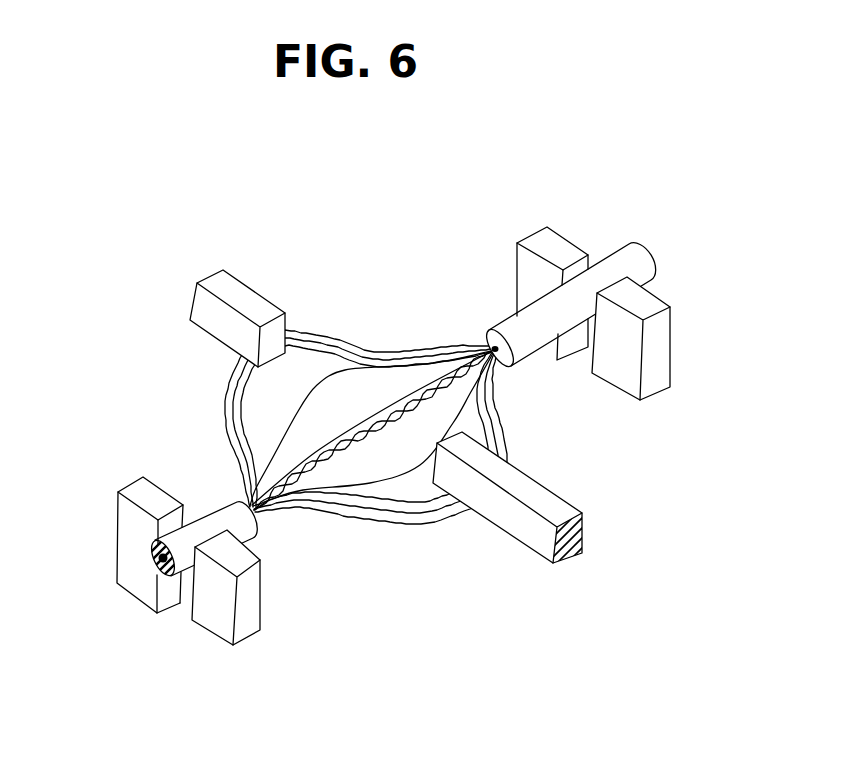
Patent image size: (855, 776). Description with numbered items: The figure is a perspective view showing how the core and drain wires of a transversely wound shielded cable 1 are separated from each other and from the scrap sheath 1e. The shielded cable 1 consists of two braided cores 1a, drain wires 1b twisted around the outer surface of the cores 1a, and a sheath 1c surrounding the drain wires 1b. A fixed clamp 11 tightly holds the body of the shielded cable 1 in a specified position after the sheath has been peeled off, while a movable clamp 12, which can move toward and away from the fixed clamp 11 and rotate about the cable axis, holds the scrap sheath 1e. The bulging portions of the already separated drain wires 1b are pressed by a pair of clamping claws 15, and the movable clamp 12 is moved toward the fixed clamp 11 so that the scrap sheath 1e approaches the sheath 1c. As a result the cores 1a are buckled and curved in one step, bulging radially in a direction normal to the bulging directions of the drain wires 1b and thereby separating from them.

The shielded cable 1 is at (17, 379).
The cores 1a is at (315, 456).
The drain wires 1b is at (230, 433).
The sheath 1c is at (240, 505).
The scrap sheath 1e is at (637, 263).
The fixed clamp 11 is at (143, 597).
The movable clamp 12 is at (567, 350).
The clamping claws 15 is at (257, 308).